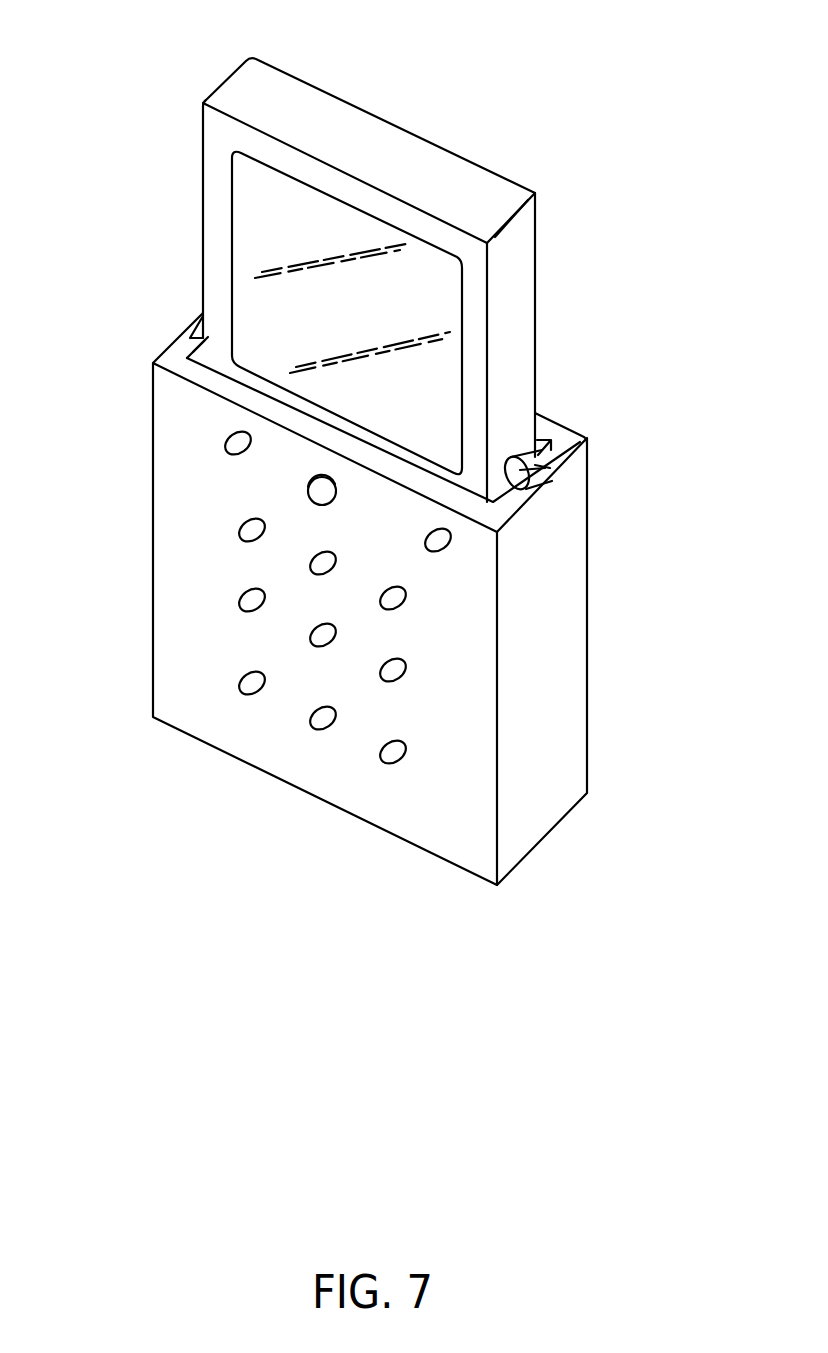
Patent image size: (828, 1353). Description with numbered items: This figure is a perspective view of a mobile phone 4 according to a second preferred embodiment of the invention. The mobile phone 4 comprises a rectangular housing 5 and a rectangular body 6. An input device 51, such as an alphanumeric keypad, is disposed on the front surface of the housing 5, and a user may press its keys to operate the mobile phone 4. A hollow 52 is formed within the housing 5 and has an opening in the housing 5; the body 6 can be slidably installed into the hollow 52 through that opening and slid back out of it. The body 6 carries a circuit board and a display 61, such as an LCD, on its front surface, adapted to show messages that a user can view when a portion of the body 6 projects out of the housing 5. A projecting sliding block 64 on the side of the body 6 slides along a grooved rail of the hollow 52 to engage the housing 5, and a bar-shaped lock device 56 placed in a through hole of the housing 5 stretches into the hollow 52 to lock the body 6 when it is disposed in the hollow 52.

The mobile phone 4 is at (563, 158).
The housing 5 is at (545, 635).
The body 6 is at (510, 303).
The input device 51 is at (238, 597).
The hollow 52 is at (540, 443).
The lock device 56 is at (322, 493).
The display 61 is at (327, 223).
The sliding block 64 is at (545, 468).